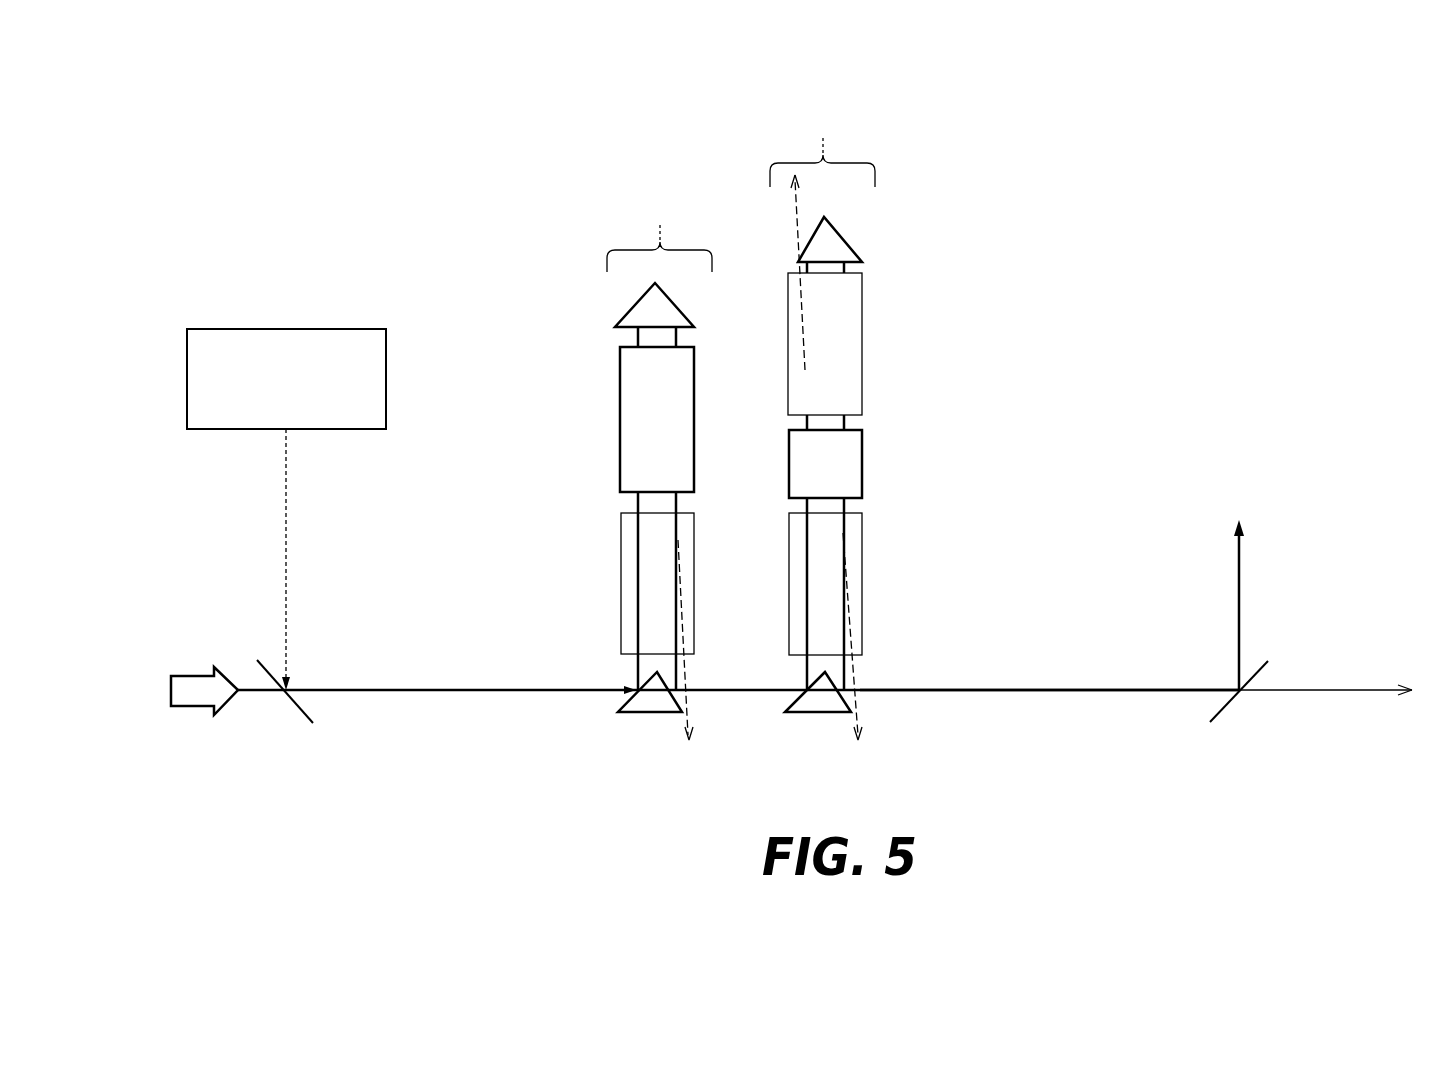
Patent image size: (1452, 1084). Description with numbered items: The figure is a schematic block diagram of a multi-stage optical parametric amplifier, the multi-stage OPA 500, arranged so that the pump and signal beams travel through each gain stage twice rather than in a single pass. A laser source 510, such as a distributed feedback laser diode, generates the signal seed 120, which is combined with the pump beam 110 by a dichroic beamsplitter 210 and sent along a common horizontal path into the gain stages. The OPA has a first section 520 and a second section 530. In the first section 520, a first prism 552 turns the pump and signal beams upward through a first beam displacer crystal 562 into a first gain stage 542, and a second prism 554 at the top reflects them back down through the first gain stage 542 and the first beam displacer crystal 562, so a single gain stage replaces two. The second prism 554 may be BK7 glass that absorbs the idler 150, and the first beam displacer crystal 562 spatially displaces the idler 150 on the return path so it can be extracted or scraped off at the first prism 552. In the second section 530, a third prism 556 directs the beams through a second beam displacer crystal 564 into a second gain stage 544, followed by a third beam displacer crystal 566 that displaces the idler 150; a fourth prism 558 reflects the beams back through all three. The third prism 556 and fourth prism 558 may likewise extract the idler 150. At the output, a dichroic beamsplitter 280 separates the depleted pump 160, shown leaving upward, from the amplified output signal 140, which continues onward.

The multi-stage OPA 500 is at (1050, 218).
The laser source 510 is at (293, 329).
The signal seed 120 is at (286, 533).
The pump beam 110 is at (212, 675).
The dichroic beamsplitter 210 is at (305, 720).
The first section 520 is at (620, 487).
The second prism 554 is at (627, 310).
The first gain stage 542 is at (620, 467).
The first beam displacer crystal 562 is at (621, 582).
The first prism 552 is at (662, 713).
The second section 530 is at (847, 446).
The fourth prism 558 is at (850, 247).
The third beam displacer crystal 566 is at (862, 367).
The second gain stage 544 is at (862, 478).
The second beam displacer crystal 564 is at (862, 552).
The third prism 556 is at (822, 712).
The idler 150 is at (688, 673).
The depleted pump 160 is at (1240, 563).
The dichroic beamsplitter 280 is at (1227, 708).
The amplified output signal 140 is at (1323, 688).